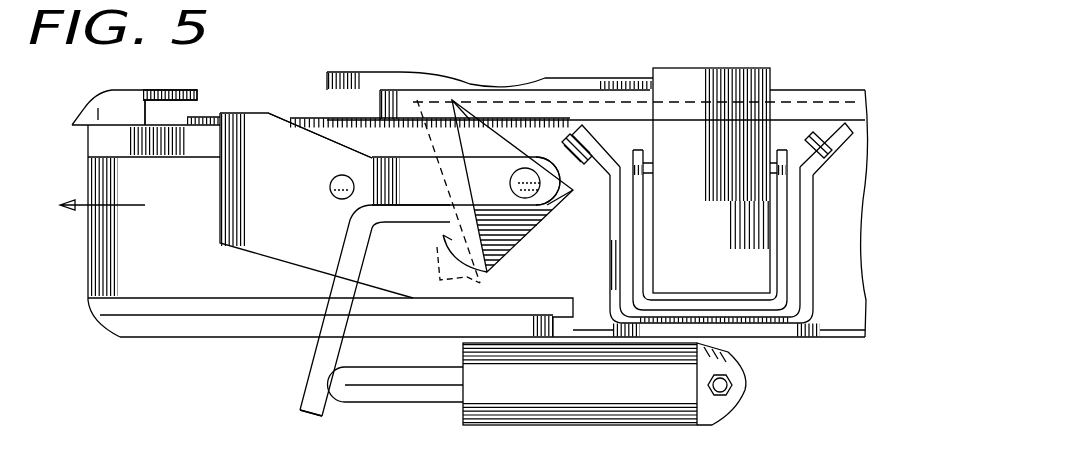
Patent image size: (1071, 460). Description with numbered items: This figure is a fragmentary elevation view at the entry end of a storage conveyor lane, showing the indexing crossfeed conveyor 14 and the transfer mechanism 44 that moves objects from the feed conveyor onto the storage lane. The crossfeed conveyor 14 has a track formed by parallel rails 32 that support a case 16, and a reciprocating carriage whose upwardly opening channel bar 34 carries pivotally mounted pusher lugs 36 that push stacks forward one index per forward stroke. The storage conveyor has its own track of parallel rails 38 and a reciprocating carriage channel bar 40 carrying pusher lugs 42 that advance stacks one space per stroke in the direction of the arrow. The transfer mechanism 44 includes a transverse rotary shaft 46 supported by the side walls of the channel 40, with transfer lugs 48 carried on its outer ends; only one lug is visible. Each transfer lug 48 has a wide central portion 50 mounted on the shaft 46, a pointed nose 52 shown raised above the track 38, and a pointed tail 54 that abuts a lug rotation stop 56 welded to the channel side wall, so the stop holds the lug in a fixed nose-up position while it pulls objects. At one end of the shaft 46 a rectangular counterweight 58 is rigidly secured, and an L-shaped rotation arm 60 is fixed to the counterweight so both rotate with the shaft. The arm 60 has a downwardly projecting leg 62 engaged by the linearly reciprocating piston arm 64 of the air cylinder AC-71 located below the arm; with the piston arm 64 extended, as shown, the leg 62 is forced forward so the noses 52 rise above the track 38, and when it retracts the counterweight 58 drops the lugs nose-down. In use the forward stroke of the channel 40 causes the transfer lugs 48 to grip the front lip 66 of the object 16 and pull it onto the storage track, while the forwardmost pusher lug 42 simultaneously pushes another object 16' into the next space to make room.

The crossfeed conveyor 14 is at (750, 312).
The case 16 is at (596, 90).
The object 16' is at (168, 82).
The rails 32 is at (462, 118).
The channel bar 34 is at (782, 228).
The pusher lugs 36 is at (718, 194).
The rails 38 is at (168, 122).
The channel bar 40 is at (100, 252).
The pusher lugs 42 is at (278, 192).
The transfer mechanism 44 is at (485, 266).
The rotary shaft 46 is at (518, 172).
The transfer lugs 48 is at (543, 147).
The central portion 50 is at (558, 171).
The pointed nose 52 is at (467, 120).
The pointed tail 54 is at (512, 242).
The lug rotation stops 56 is at (477, 284).
The counterweight 58 is at (372, 155).
The rotation arm 60 is at (340, 233).
The leg 62 is at (335, 288).
The piston arm 64 is at (445, 356).
The front lip 66 is at (466, 181).
The air cylinder AC-71 is at (660, 415).